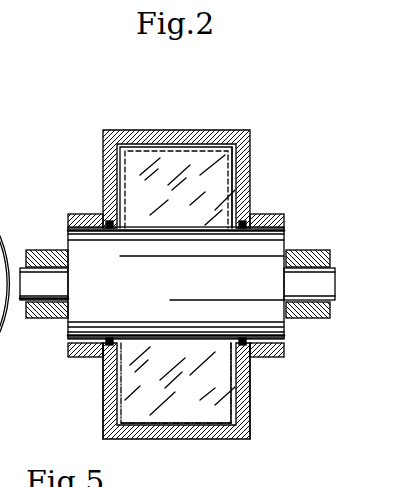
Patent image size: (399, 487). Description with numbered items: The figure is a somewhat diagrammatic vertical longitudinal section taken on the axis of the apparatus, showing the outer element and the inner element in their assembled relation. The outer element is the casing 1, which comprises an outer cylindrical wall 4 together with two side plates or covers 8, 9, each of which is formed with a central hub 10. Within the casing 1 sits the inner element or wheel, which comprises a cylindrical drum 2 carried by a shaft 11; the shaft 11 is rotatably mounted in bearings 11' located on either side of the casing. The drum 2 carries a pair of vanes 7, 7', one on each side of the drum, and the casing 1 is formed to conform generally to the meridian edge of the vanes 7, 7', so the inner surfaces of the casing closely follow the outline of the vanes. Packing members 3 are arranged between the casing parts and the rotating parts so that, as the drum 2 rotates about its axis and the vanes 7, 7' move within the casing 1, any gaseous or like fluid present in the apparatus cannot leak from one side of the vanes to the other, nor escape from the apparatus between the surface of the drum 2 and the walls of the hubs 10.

The casing 1 is at (102, 181).
The cylindrical drum 2 is at (80, 318).
The packing members 3 is at (193, 130).
The outer cylindrical wall 4 is at (183, 428).
The vane 7 is at (253, 177).
The vane 7' is at (238, 402).
The side plate 8 is at (103, 417).
The side plate 9 is at (252, 385).
The central hub 10 is at (292, 219).
The shaft 11 is at (172, 300).
The bearings 11' is at (175, 266).